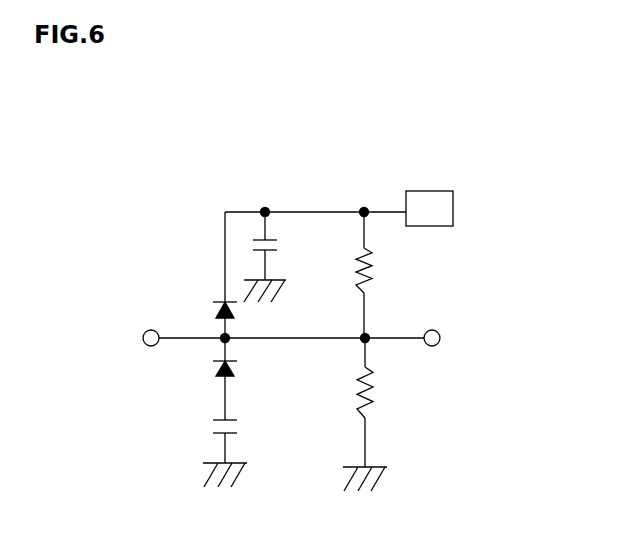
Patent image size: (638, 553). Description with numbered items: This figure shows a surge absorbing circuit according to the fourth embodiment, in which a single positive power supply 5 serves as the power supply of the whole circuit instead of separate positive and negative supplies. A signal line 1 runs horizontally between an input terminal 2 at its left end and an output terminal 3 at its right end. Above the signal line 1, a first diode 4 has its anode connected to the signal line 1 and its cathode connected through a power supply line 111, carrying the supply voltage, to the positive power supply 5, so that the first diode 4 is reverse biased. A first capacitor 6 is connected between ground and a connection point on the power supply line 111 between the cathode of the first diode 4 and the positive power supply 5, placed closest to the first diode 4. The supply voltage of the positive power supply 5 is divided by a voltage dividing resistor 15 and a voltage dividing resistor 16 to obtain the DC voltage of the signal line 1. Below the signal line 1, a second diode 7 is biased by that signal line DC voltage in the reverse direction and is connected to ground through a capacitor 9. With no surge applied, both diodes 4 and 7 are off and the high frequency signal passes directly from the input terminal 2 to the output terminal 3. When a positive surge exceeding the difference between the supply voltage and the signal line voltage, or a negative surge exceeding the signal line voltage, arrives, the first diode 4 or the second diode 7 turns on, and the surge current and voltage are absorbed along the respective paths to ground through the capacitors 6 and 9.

The power supply line 111 is at (304, 190).
The positive power supply 5 is at (450, 177).
The voltage dividing resistor 15 is at (394, 267).
The voltage dividing resistor 16 is at (404, 412).
The first capacitor 6 is at (283, 256).
The first diode 4 is at (194, 276).
The second diode 7 is at (204, 386).
The capacitor 9 is at (256, 442).
The input terminal 2 is at (133, 313).
The output terminal 3 is at (446, 315).
The signal line 1 is at (409, 352).